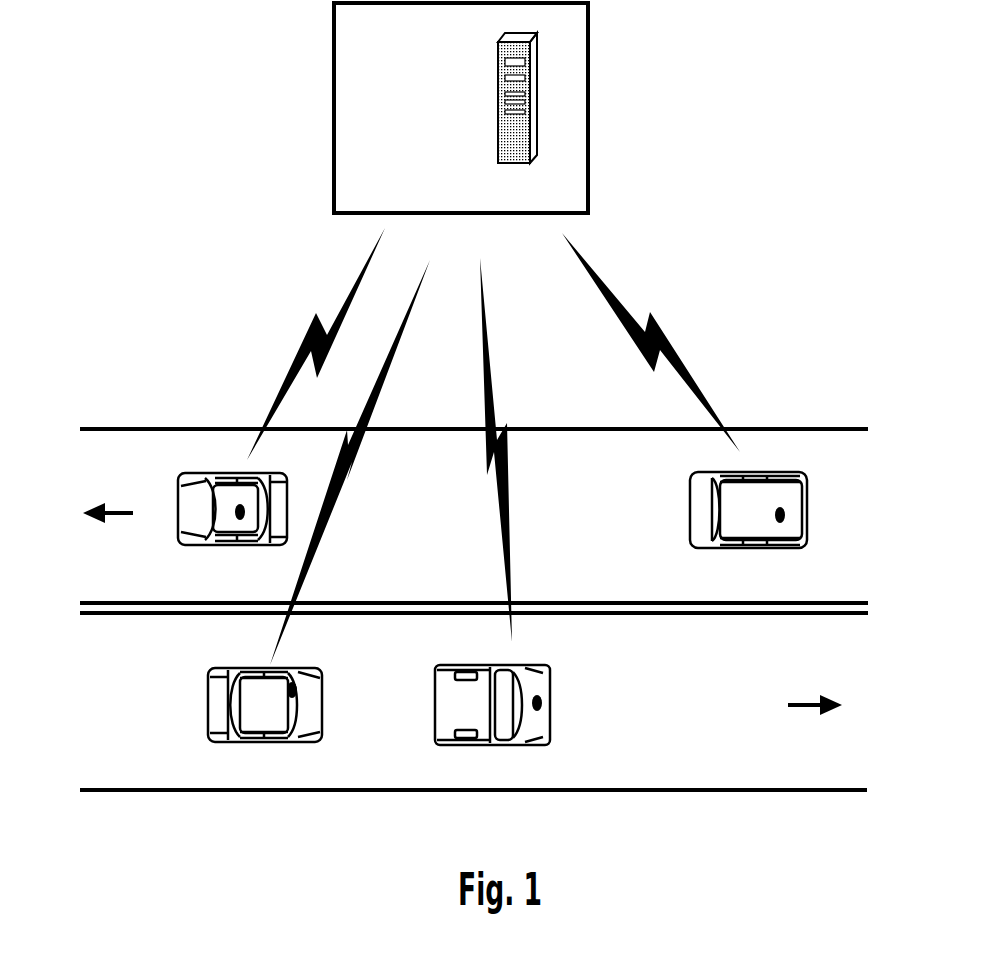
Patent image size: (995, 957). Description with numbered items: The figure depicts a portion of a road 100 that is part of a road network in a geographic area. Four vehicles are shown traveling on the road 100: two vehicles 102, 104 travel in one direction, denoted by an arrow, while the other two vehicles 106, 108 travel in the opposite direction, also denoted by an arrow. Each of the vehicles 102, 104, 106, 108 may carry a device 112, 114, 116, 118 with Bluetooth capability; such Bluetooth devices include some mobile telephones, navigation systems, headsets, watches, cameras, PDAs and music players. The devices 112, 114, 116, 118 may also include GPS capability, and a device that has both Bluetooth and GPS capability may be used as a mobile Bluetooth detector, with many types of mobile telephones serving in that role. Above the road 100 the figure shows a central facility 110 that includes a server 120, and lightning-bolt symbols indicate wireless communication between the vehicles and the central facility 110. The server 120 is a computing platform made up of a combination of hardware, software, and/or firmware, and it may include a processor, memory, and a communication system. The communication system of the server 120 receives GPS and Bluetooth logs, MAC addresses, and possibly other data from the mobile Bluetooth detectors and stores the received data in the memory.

The road 100 is at (108, 428).
The vehicle 102 is at (178, 490).
The vehicle 104 is at (690, 505).
The vehicle 106 is at (208, 705).
The vehicle 108 is at (437, 710).
The central facility 110 is at (373, 161).
The device 112 is at (242, 523).
The device 114 is at (785, 512).
The device 116 is at (296, 688).
The device 118 is at (542, 702).
The server 120 is at (571, 202).